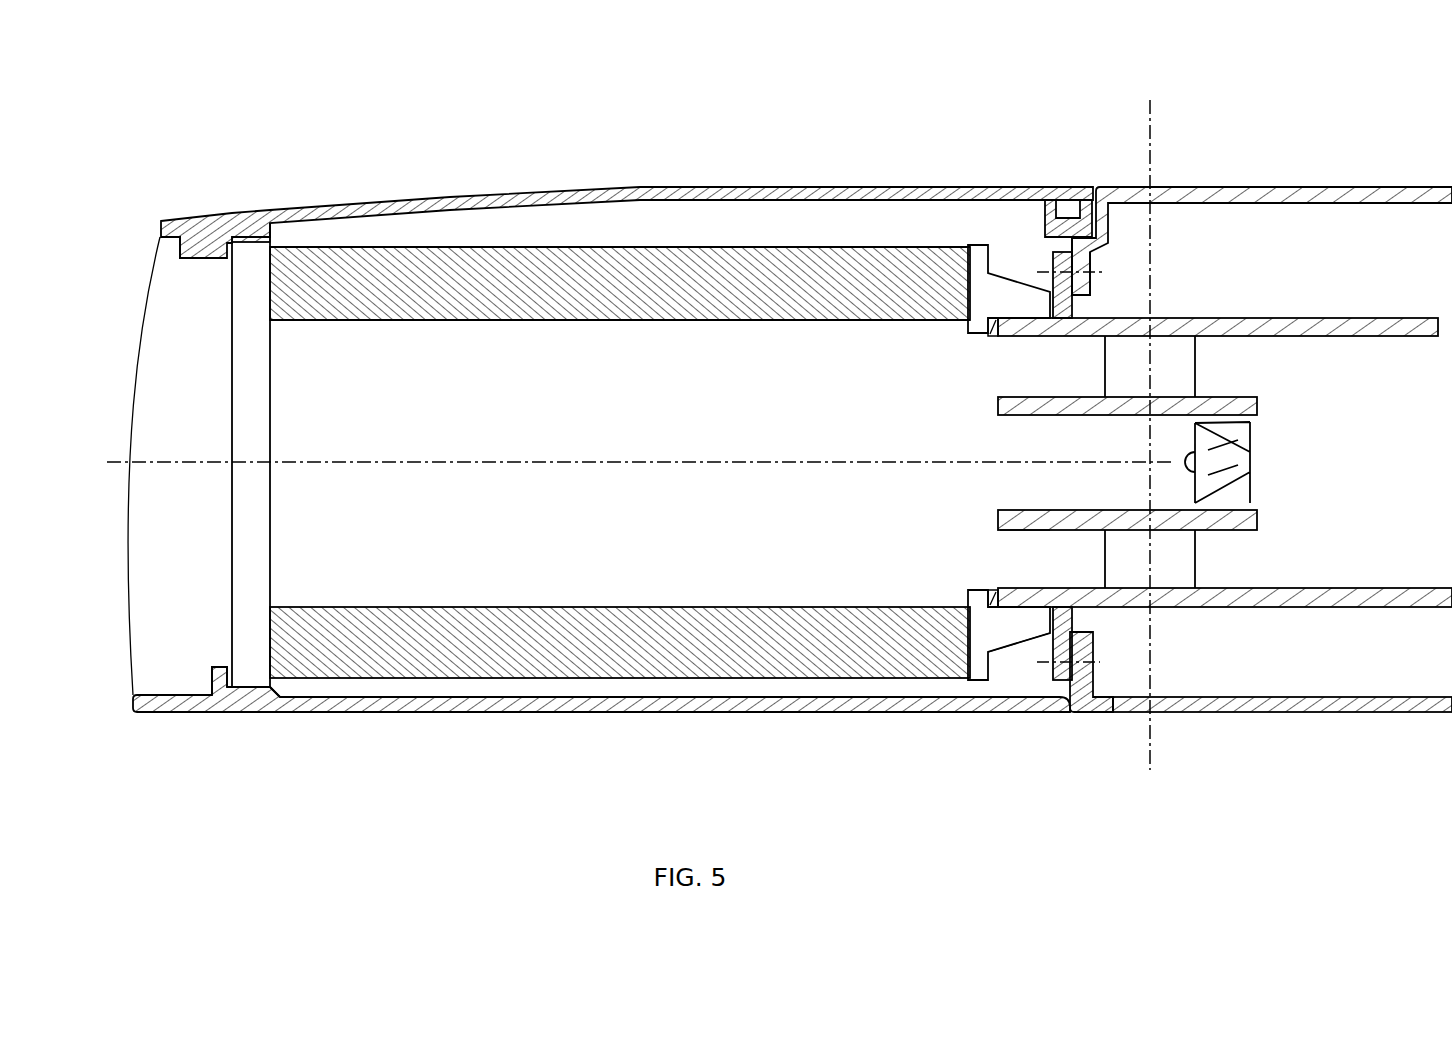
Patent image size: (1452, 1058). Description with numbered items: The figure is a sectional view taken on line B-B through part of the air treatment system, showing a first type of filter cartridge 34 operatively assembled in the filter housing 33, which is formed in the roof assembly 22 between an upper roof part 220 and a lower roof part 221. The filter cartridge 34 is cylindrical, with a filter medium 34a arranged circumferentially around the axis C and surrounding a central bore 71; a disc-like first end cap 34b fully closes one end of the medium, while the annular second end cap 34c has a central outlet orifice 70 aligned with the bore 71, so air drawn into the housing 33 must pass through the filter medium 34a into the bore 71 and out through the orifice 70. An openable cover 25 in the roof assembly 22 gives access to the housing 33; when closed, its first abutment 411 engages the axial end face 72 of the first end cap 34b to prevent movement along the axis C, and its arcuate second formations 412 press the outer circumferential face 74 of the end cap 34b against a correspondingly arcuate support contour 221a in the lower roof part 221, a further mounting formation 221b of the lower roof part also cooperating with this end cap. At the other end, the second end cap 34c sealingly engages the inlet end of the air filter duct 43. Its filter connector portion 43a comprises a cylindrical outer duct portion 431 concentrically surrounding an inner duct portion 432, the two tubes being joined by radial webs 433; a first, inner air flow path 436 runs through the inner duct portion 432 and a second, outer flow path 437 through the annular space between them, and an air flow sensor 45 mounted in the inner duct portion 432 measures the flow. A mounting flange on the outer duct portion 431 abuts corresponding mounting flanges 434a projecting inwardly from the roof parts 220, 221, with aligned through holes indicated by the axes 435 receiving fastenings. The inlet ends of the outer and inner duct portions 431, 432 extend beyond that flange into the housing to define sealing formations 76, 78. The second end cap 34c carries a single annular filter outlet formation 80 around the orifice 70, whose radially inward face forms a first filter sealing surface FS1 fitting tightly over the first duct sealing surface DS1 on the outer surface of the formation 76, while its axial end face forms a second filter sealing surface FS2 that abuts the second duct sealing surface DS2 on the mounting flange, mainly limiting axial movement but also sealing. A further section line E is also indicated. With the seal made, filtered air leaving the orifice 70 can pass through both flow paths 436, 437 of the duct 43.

The roof assembly 22 is at (538, 156).
The openable cover 25 is at (647, 187).
The first abutment 411 is at (197, 240).
The second formations 412 is at (260, 237).
The outer circumferential face 74 is at (247, 237).
The filter cartridge 34 is at (835, 263).
The filter medium 34a is at (685, 273).
The first end cap 34b is at (243, 272).
The second end cap 34c is at (978, 245).
The filter housing 33 is at (465, 238).
The axial end face 72 is at (232, 398).
The longitudinal axis C is at (195, 462).
The outlet orifice 70 is at (967, 592).
The first sealing formation 76 is at (1003, 331).
The sealing formation 78 is at (1025, 515).
The filter outlet formation 80 is at (1003, 635).
The first filter sealing surface FS1 is at (1003, 333).
The second filter sealing surface FS2 is at (1008, 596).
The first duct sealing surface DS1 is at (1010, 600).
The second duct sealing surface DS2 is at (1047, 250).
The air filter duct 43 is at (1160, 497).
The filter connector portion 43a is at (1000, 517).
The outer duct portion 431 is at (1387, 318).
The inner duct portion 432 is at (1257, 405).
The radial webs 433 is at (1183, 585).
The corresponding mounting flanges 434a is at (1090, 268).
The through hole axes 435 is at (1102, 663).
The first air flow path 436 is at (1120, 419).
The second air flow path 437 is at (1179, 559).
The air flow sensor 45 is at (1250, 462).
The upper roof part 220 is at (1400, 187).
The lower roof part 221 is at (867, 712).
The arcuate support contour 221a is at (258, 705).
The mounting formation 221b is at (221, 700).
The central bore 71 is at (641, 442).
The section line E is at (1152, 115).
The section line B-B is at (617, 760).